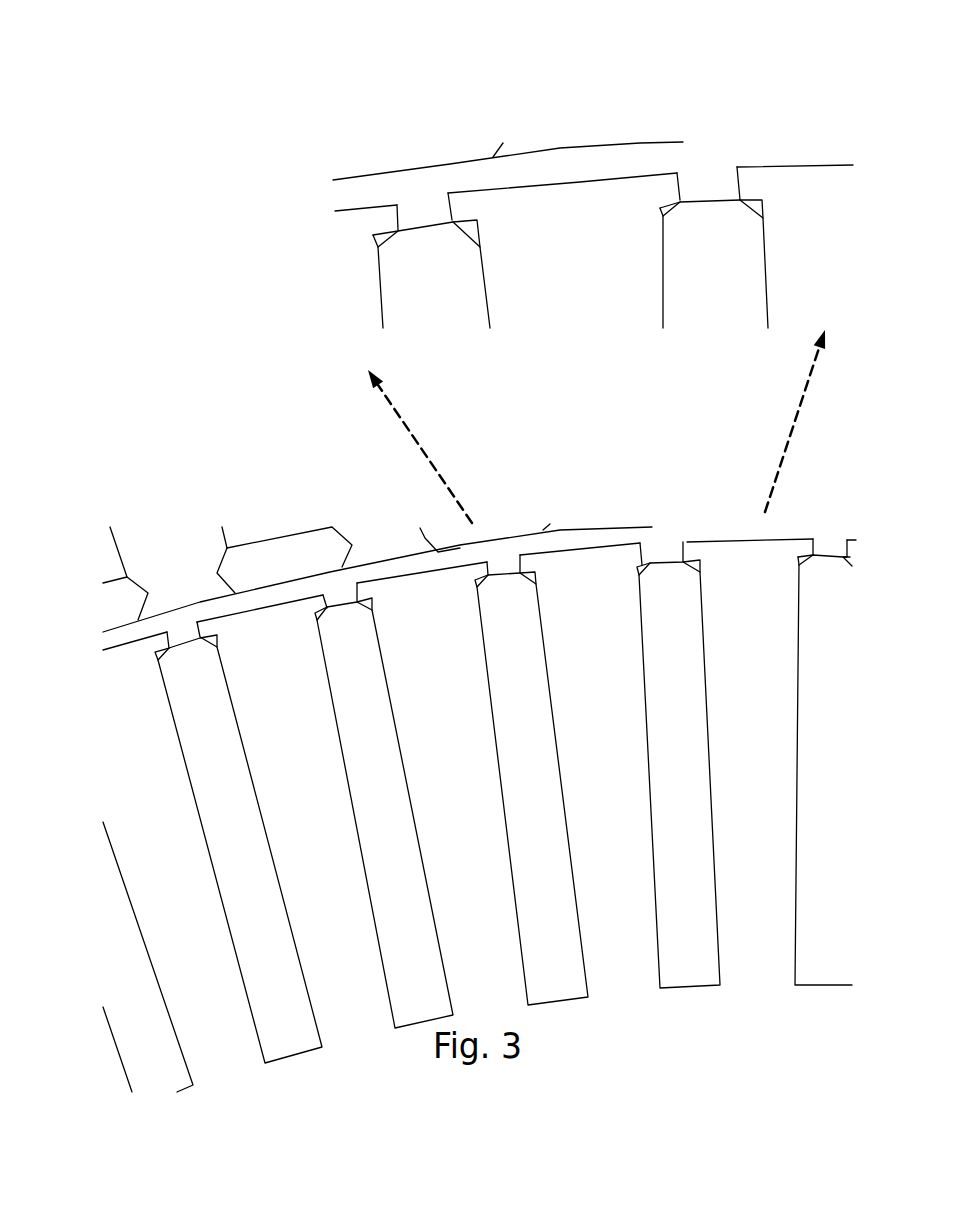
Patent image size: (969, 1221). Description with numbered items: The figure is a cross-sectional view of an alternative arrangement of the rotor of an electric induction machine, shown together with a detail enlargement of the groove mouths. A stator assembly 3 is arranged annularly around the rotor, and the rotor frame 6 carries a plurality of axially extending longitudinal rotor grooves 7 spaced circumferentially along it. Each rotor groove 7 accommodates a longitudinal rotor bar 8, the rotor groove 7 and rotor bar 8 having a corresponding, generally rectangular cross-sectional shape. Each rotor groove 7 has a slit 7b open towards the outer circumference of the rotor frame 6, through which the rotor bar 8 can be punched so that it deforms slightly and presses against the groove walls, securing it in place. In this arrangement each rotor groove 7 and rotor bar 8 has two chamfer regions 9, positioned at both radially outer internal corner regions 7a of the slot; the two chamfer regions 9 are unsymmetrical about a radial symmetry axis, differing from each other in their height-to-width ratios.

The stator assembly 3 is at (449, 547).
The rotor frame 6 is at (288, 643).
The rotor groove 7 is at (233, 703).
The corner region 7a is at (505, 334).
The slit 7b is at (182, 640).
The rotor bar 8 is at (187, 723).
The chamfer region 9 is at (568, 305).